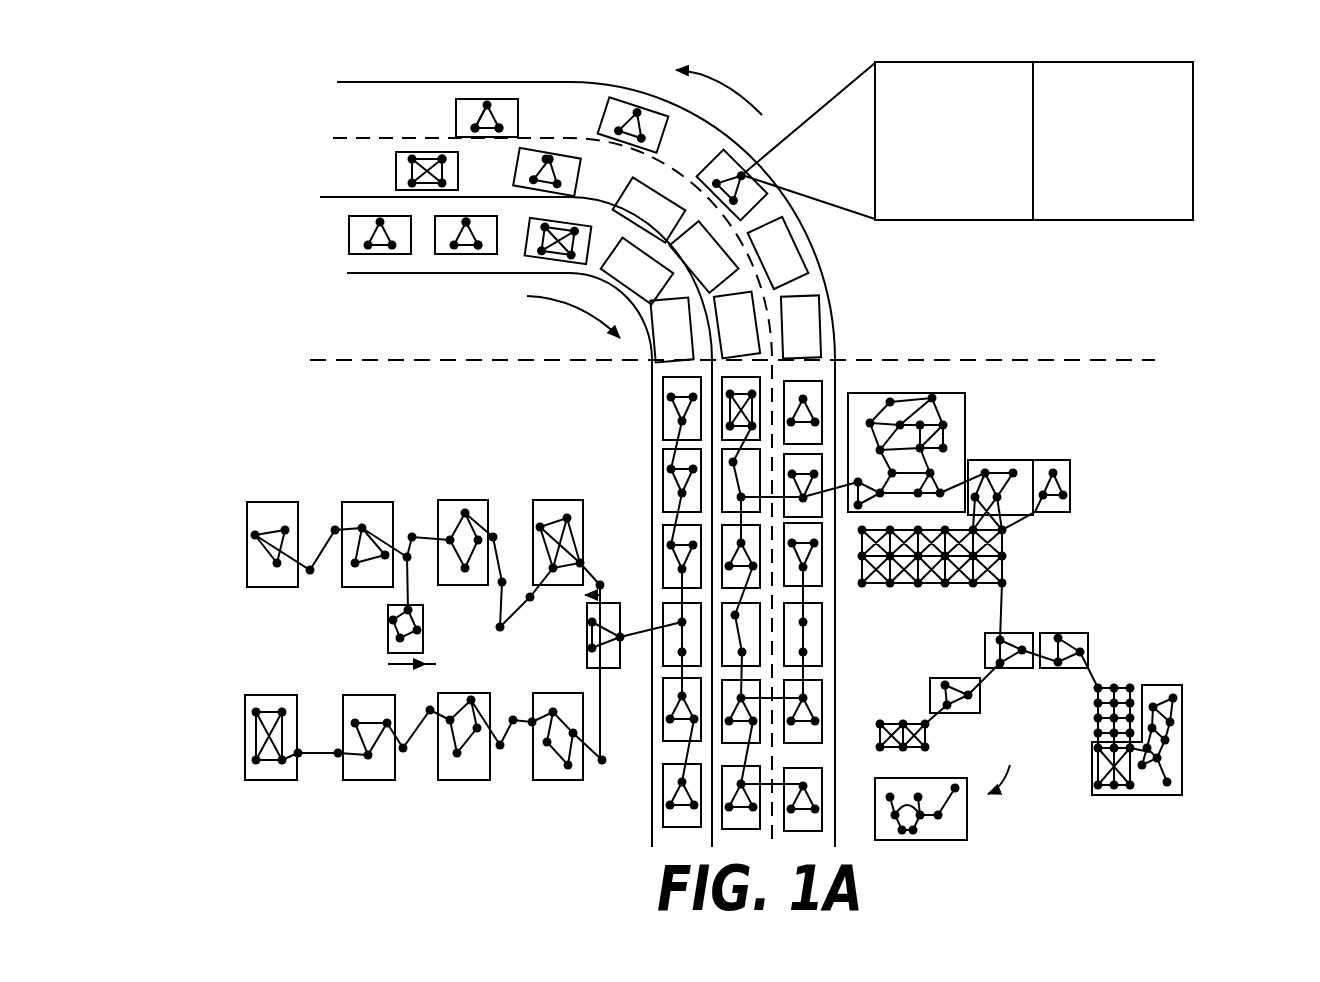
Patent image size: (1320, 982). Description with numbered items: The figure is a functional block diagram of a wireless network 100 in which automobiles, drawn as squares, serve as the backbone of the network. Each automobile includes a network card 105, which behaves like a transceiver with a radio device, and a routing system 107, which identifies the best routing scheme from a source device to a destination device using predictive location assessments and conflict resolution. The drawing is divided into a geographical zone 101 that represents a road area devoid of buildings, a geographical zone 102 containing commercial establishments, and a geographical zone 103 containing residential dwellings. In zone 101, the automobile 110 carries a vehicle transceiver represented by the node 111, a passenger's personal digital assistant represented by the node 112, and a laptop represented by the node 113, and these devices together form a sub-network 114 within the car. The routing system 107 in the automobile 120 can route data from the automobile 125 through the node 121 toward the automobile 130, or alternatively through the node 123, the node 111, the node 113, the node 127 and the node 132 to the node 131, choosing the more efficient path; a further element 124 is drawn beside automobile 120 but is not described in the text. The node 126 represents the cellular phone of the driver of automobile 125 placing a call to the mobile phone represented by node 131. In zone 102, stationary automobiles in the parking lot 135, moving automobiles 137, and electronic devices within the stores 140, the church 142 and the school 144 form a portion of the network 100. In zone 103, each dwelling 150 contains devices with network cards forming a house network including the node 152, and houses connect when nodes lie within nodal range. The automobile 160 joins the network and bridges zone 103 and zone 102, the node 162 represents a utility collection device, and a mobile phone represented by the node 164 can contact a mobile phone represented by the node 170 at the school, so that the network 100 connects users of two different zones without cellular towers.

The wireless network 100 is at (1238, 113).
The geographical zone 101 is at (495, 193).
The geographical zone 102 is at (1137, 533).
The geographical zone 103 is at (516, 604).
The network card 105 is at (887, 141).
The routing system 107 is at (1113, 141).
The automobile 110 is at (458, 100).
The node 111 is at (456, 125).
The node 112 is at (475, 124).
The node 113 is at (490, 132).
The sub-network 114 is at (500, 124).
The automobile 120 is at (534, 181).
The node 121 is at (396, 177).
The node 123 is at (440, 158).
The link 124 is at (414, 192).
The automobile 125 is at (348, 246).
The node 126 is at (372, 220).
The node 127 is at (547, 156).
The automobile 130 is at (455, 250).
The node 131 is at (444, 223).
The node 132 is at (481, 248).
The parking lot 135 is at (1044, 565).
The moving automobiles 137 is at (901, 677).
The stores 140 is at (1016, 418).
The church 142 is at (953, 835).
The school 144 is at (1146, 796).
The dwelling 150 is at (553, 572).
The node 152 is at (582, 560).
The automobile 160 is at (617, 670).
The node 162 is at (530, 601).
The node 164 is at (497, 627).
The node 170 is at (1195, 680).